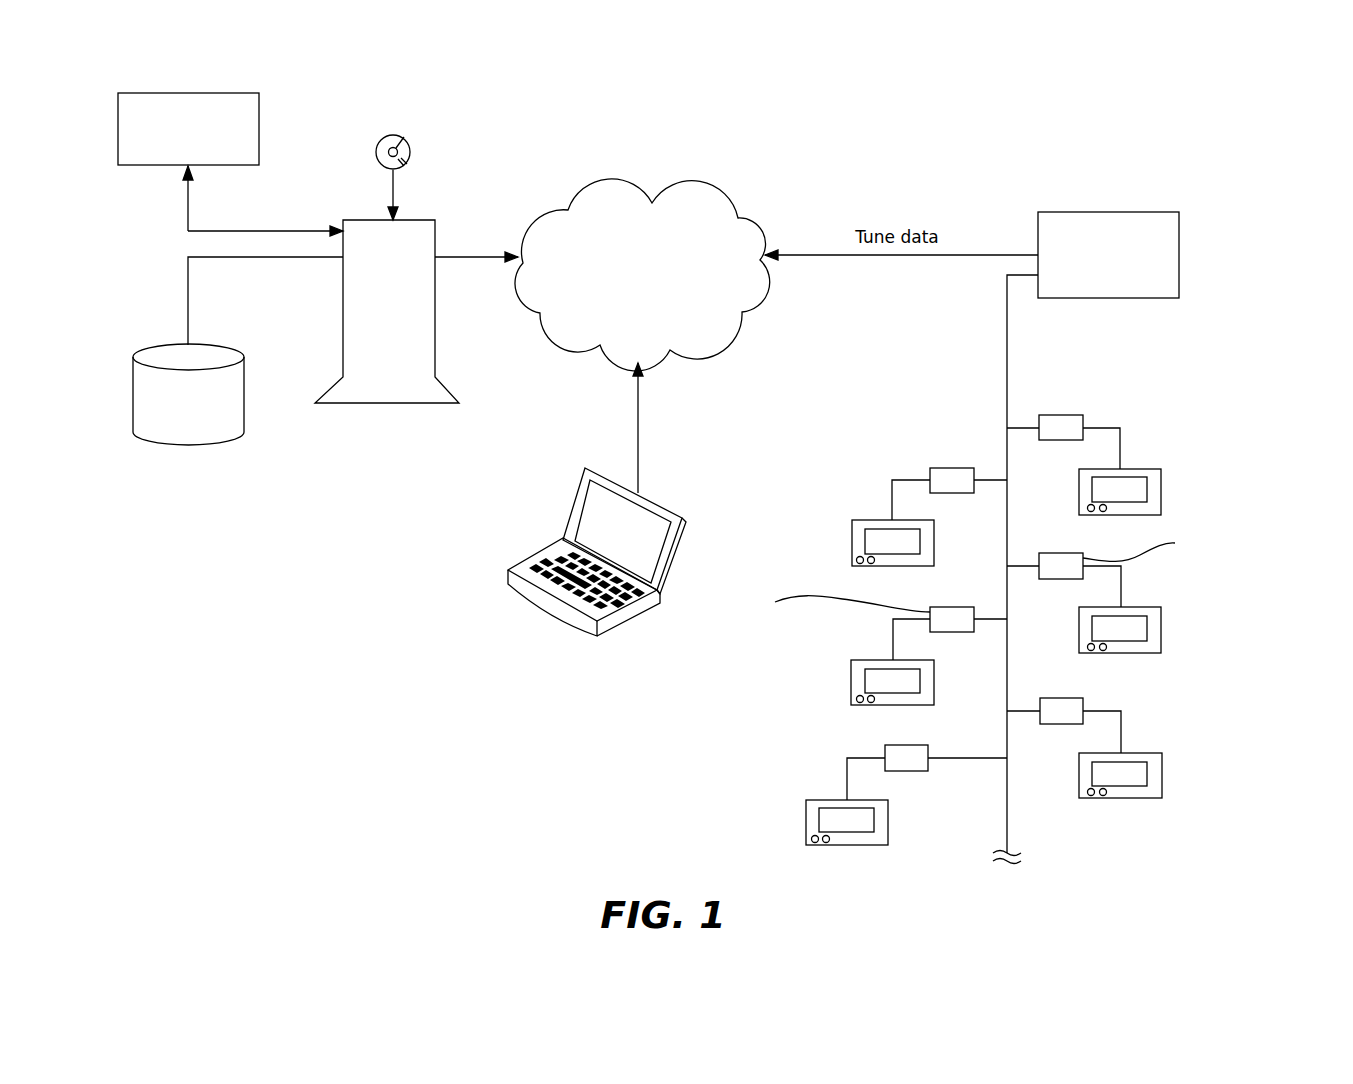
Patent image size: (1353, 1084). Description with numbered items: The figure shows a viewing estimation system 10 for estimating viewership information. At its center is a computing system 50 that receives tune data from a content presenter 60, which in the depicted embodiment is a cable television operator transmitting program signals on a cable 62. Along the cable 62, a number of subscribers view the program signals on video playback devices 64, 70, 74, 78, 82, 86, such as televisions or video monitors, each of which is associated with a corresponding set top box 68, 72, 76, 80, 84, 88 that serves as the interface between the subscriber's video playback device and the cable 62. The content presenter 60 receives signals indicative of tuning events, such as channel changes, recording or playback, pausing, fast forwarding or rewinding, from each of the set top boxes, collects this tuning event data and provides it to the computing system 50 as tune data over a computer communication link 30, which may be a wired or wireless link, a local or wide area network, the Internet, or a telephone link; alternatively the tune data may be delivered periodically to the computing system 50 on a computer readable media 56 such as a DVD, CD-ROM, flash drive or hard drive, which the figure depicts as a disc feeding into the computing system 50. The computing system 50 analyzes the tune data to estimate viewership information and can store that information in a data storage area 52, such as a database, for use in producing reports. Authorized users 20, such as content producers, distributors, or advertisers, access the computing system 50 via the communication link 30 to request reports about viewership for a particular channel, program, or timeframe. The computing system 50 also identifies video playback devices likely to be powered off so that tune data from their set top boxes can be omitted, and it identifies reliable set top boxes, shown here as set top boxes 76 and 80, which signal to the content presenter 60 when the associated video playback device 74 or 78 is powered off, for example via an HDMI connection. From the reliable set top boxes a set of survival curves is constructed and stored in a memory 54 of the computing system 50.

The viewing estimation system 10 is at (930, 170).
The authorized users 20 is at (540, 620).
The computer communication link 30 is at (642, 275).
The computing system 50 is at (435, 232).
The data storage area 52 is at (187, 445).
The memory 54 is at (259, 123).
The computer readable medium 56 is at (410, 151).
The content presenter 60 is at (1130, 212).
The cable 62 is at (1007, 358).
The video playback device 64 is at (1120, 480).
The set top box 68 is at (1063, 431).
The video playback device 70 is at (893, 531).
The set top box 72 is at (949, 483).
The video playback device 74 is at (1120, 618).
The set top box 76 is at (1154, 569).
The video playback device 78 is at (892, 671).
The set top box 80 is at (865, 622).
The video playback device 82 is at (1120, 764).
The set top box 84 is at (1064, 714).
The video playback device 86 is at (847, 811).
The set top box 88 is at (927, 761).